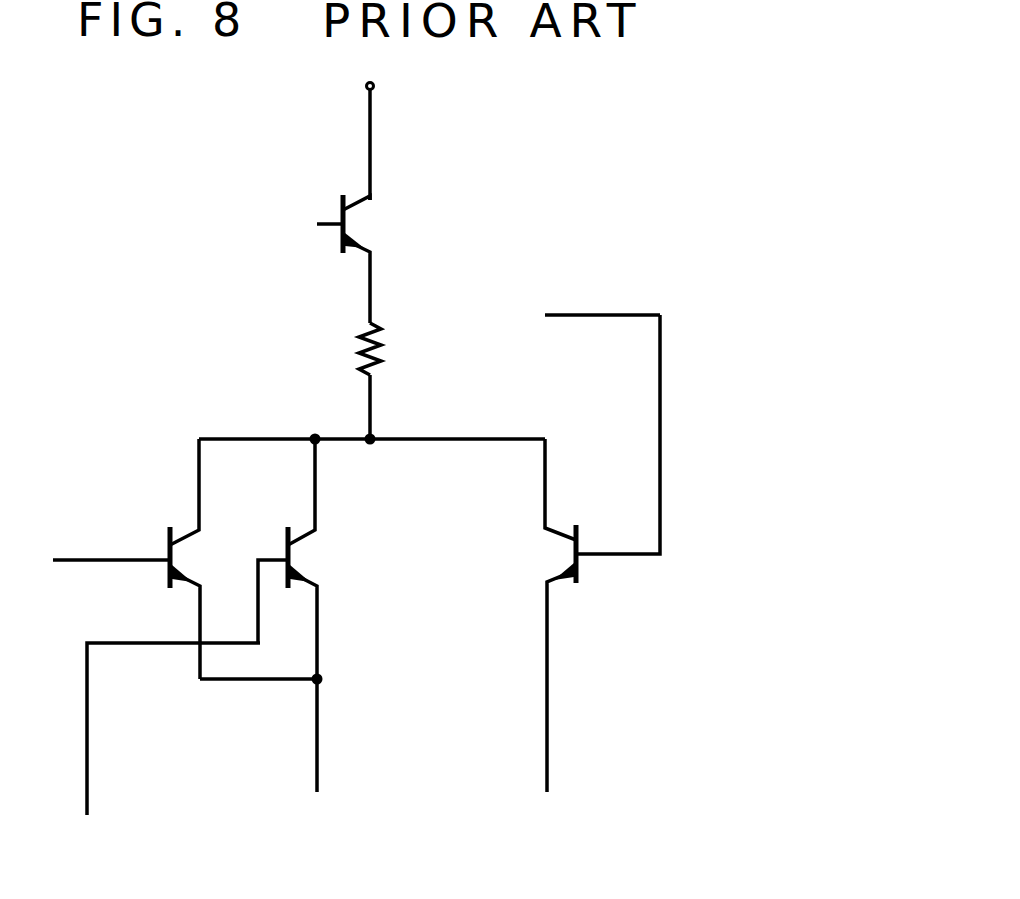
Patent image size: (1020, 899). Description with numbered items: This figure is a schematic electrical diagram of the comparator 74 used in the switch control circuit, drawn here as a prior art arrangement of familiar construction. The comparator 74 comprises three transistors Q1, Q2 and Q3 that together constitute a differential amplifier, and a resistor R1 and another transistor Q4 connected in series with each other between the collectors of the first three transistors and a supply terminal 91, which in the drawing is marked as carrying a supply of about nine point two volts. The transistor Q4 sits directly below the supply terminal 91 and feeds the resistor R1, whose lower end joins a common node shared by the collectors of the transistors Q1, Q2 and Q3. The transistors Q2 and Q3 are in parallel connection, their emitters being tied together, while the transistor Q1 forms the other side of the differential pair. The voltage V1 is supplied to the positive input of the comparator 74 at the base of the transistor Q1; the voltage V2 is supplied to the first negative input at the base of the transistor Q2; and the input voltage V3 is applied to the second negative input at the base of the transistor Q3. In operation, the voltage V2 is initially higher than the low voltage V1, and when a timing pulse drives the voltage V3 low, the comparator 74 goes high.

The comparator 74 is at (572, 150).
The supply terminal 91 is at (365, 87).
The first transistor Q1 is at (562, 540).
The second transistor Q2 is at (200, 536).
The third transistor Q3 is at (318, 536).
The fourth transistor Q4 is at (362, 212).
The resistor R1 is at (380, 341).
The voltage at positive input V1 is at (577, 315).
The voltage at first negative input V2 is at (86, 560).
The voltage at second negative input V3 is at (88, 772).